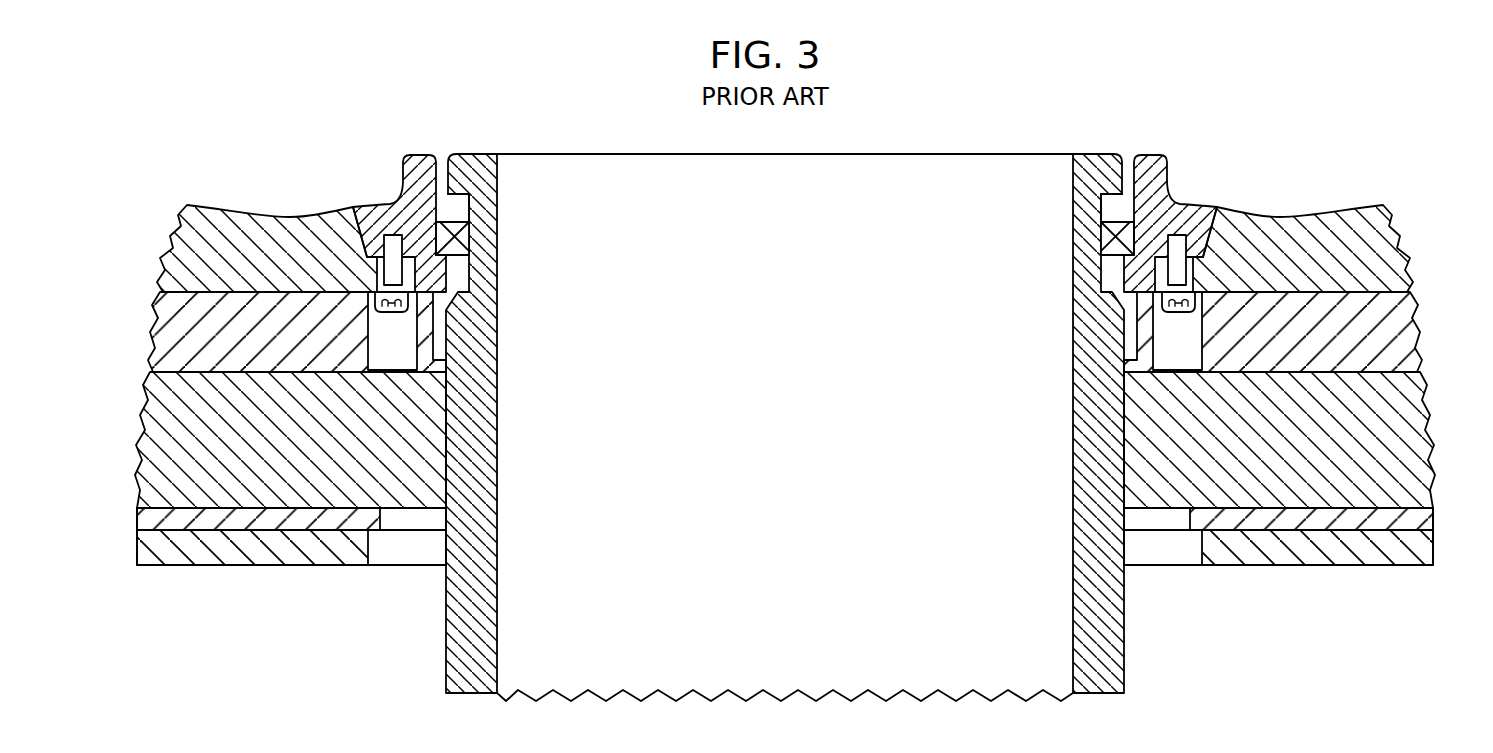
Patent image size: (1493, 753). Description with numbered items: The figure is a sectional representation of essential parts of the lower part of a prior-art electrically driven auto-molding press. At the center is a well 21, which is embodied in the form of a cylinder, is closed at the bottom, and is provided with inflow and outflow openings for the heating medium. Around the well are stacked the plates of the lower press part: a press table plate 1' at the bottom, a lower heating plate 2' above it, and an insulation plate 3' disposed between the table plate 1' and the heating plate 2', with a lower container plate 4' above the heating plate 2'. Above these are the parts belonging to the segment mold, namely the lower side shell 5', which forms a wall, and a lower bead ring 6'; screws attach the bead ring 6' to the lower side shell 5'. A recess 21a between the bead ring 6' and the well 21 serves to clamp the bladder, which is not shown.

The well 21 is at (1098, 600).
The recess 21a is at (1121, 210).
The lower bead ring 6' is at (793, 219).
The lower side shell 5' is at (785, 227).
The lower container plate 4' is at (807, 327).
The lower heating plate 2' is at (802, 440).
The insulation plate 3' is at (804, 490).
The press table plate 1' is at (785, 586).